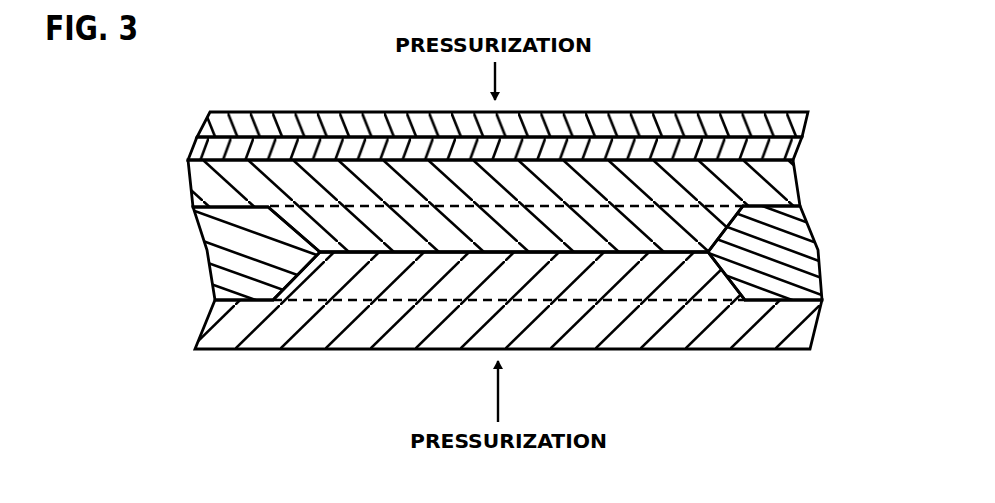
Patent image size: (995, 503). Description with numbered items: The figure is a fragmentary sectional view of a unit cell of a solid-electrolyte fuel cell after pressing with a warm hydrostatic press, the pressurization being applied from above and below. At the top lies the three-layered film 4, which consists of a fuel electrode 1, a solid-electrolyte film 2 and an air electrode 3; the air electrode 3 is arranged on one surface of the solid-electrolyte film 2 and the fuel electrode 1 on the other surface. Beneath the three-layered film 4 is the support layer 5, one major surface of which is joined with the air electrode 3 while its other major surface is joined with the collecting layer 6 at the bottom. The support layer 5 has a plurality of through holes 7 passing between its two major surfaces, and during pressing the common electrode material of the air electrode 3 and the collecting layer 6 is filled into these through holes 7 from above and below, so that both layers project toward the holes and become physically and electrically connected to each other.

The fuel electrode 1 is at (808, 113).
The solid-electrolyte film 2 is at (795, 141).
The air electrode 3 is at (776, 178).
The three-layered film 4 is at (871, 98).
The support layer 5 is at (222, 250).
The collecting layer 6 is at (795, 317).
The through holes 7 is at (387, 258).